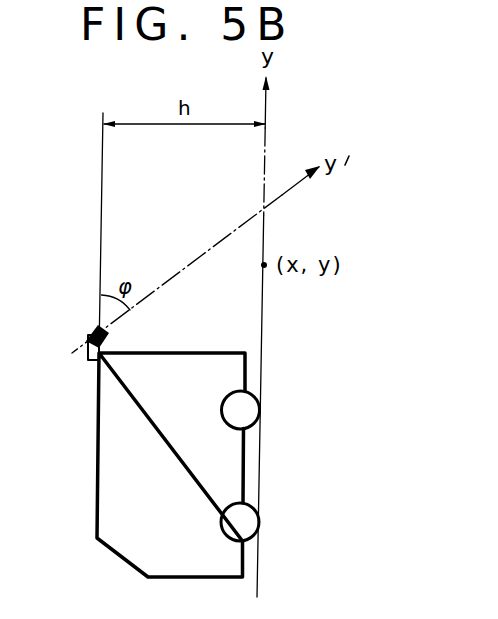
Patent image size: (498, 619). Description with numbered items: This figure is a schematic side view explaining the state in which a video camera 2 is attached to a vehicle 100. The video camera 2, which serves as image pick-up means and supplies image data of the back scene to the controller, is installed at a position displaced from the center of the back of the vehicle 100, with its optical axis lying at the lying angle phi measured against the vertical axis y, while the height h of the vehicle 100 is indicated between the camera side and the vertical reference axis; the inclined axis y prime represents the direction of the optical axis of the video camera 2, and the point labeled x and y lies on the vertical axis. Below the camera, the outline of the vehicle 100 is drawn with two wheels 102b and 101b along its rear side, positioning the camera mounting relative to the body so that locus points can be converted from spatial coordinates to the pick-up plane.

The video camera 2 is at (88, 365).
The vehicle 100 is at (97, 486).
The rear wheel 102b is at (257, 393).
The front wheel 101b is at (256, 501).